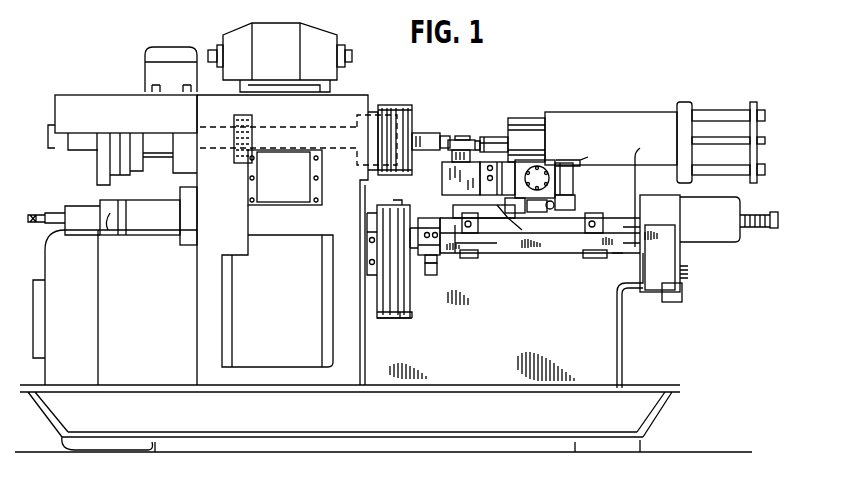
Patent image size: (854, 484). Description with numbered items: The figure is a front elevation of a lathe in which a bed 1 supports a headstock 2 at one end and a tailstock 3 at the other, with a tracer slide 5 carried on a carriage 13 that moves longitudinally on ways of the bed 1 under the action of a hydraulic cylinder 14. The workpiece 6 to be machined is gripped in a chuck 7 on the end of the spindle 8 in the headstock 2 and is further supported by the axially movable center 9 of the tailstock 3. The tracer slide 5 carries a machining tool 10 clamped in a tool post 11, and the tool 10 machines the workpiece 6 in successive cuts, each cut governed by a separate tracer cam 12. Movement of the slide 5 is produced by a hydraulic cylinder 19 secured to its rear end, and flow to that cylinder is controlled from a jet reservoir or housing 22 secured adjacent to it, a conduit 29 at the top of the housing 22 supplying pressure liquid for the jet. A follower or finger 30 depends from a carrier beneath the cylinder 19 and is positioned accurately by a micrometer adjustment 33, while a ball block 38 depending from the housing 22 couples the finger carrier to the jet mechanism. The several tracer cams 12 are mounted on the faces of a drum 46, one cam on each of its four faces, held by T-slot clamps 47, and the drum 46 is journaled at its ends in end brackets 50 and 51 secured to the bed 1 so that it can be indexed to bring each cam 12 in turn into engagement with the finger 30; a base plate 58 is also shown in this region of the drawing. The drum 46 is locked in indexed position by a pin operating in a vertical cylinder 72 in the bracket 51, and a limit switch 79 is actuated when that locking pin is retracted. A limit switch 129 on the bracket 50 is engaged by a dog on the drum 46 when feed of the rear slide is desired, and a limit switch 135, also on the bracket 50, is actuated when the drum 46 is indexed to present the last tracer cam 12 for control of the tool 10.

The bed 1 is at (622, 340).
The headstock 2 is at (368, 105).
The tailstock 3 is at (563, 112).
The tracer slide 5 is at (450, 180).
The workpiece 6 is at (437, 133).
The chuck 7 is at (400, 105).
The spindle 8 is at (325, 127).
The axially movable center 9 is at (498, 137).
The machining tool 10 is at (460, 140).
The tool post 11 is at (452, 157).
The tracer cam 12 is at (503, 233).
The carriage 13 is at (453, 205).
The hydraulic cylinder 14 is at (162, 200).
The hydraulic cylinder 19 is at (513, 170).
The jet reservoir or housing 22 is at (575, 180).
The conduit 29 is at (572, 162).
The follower or finger 30 is at (522, 230).
The micrometer adjustment 33 is at (545, 180).
The ball block 38 is at (575, 203).
The drum 46 is at (402, 318).
The T-slot clamps 47 is at (466, 233).
The end bracket 50 is at (377, 222).
The end bracket 51 is at (670, 243).
The base plate 58 is at (379, 316).
The vertical cylinder 72 is at (688, 275).
The limit switch 79 is at (683, 296).
The limit switch 129 is at (428, 263).
The limit switch 135 is at (436, 272).